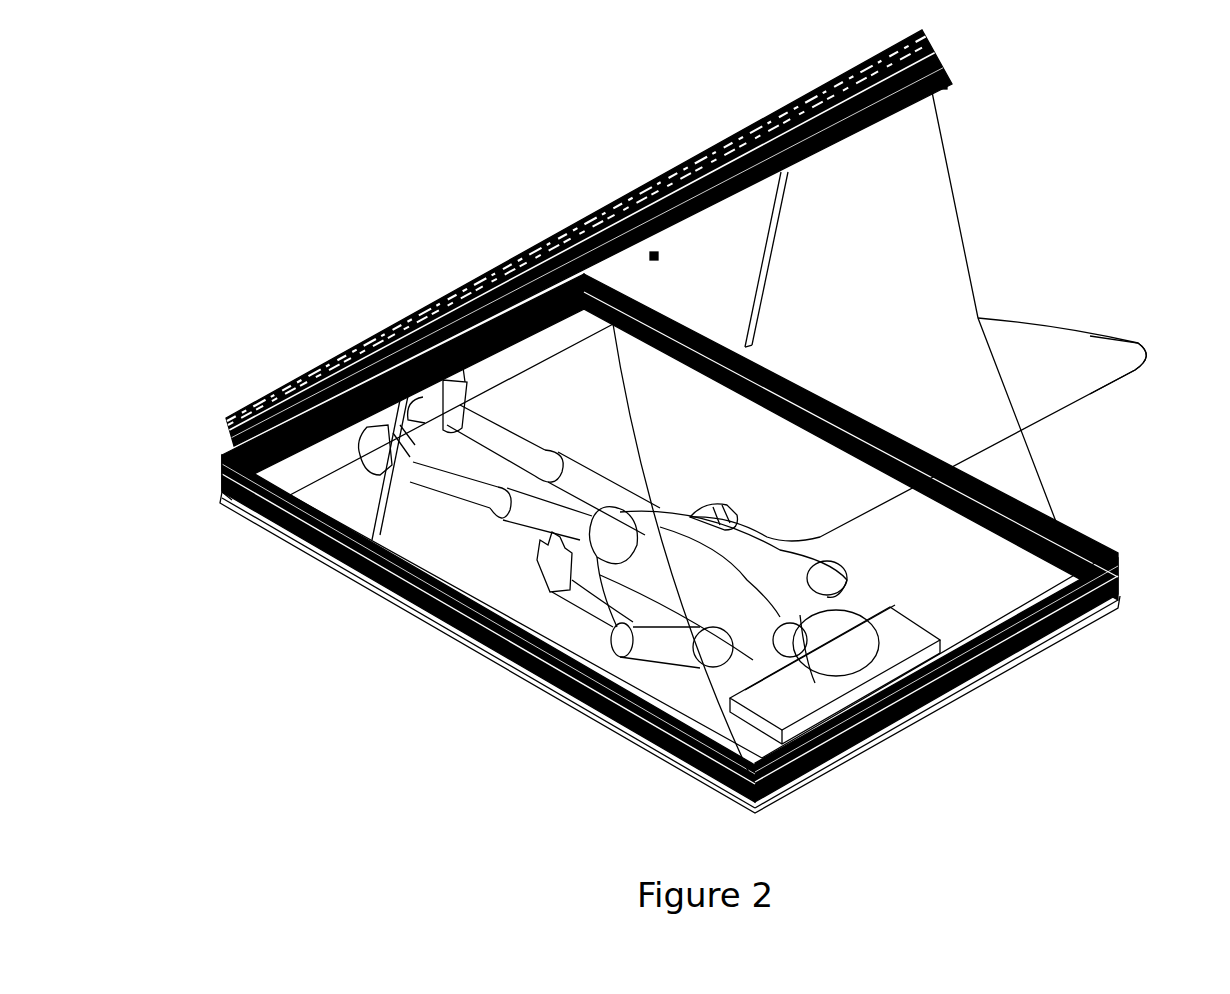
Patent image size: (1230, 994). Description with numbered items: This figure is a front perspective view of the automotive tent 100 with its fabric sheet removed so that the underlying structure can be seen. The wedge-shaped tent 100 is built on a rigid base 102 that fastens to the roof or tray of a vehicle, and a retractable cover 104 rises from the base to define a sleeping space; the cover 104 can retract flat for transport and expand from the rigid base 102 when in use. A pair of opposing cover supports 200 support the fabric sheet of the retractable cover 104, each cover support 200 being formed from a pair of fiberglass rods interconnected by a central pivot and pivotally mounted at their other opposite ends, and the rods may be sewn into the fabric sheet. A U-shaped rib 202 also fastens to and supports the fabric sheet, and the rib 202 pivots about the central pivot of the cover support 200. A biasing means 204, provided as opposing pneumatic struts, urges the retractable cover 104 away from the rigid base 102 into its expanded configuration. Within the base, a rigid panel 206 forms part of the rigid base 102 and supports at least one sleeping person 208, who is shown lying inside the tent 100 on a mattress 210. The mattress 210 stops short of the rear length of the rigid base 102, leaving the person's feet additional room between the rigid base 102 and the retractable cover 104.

The automotive tent 100 is at (368, 93).
The rigid base 102 is at (505, 663).
The retractable cover 104 is at (708, 125).
The cover support 200 is at (950, 193).
The U-shaped rib 202 is at (1080, 400).
The biasing means 204 is at (767, 228).
The rigid panel 206 is at (302, 490).
The sleeping person 208 is at (710, 585).
The mattress 210 is at (433, 553).